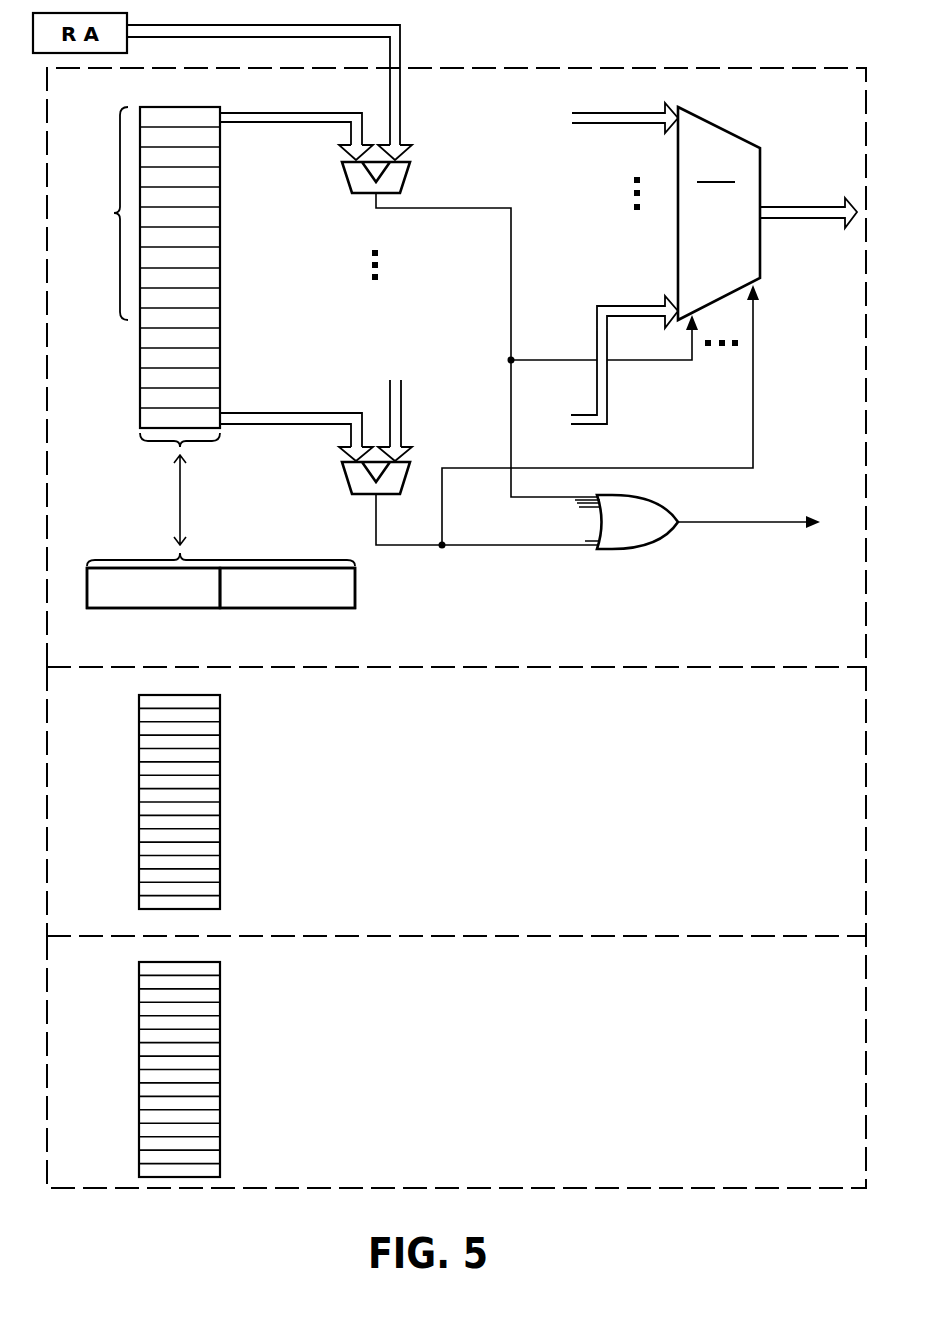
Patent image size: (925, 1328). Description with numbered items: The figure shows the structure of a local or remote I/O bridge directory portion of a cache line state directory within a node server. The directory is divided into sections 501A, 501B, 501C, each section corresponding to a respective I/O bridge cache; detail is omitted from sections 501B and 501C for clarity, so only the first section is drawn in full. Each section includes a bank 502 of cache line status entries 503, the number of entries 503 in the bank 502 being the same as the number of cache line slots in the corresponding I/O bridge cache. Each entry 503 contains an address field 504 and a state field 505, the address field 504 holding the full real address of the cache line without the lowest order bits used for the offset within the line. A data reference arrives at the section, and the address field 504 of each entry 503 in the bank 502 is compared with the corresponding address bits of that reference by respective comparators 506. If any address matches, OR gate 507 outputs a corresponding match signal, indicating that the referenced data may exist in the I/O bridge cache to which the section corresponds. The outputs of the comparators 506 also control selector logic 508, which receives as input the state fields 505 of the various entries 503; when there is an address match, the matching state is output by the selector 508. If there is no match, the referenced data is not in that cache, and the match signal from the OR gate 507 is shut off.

The section 501A is at (843, 131).
The section 501B is at (843, 704).
The section 501C is at (843, 972).
The bank 502 is at (99, 213).
The cache line status entry 503 is at (183, 106).
The address field 504 is at (140, 611).
The state field 505 is at (309, 611).
The comparators 506 is at (316, 500).
The OR gate 507 is at (650, 531).
The selector logic 508 is at (714, 263).